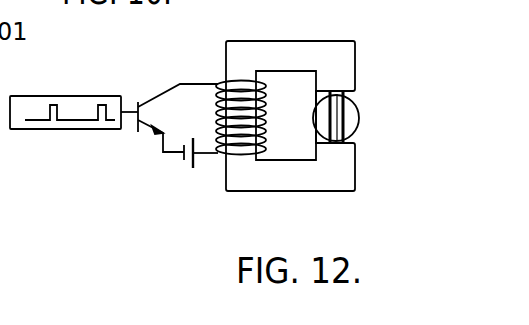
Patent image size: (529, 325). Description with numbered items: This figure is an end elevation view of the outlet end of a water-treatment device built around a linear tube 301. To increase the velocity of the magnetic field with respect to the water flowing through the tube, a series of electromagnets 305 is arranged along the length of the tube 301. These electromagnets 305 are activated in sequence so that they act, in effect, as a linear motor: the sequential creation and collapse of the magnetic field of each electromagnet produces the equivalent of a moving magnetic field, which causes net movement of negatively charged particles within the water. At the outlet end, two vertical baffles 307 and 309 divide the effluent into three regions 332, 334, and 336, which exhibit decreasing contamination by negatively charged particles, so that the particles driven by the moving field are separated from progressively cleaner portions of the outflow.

The linear tube 301 is at (357, 106).
The electromagnets 305 is at (239, 45).
The vertical baffle 307 is at (357, 106).
The vertical baffle 309 is at (327, 88).
The region 332 is at (324, 118).
The region 334 is at (356, 151).
The region 336 is at (358, 116).